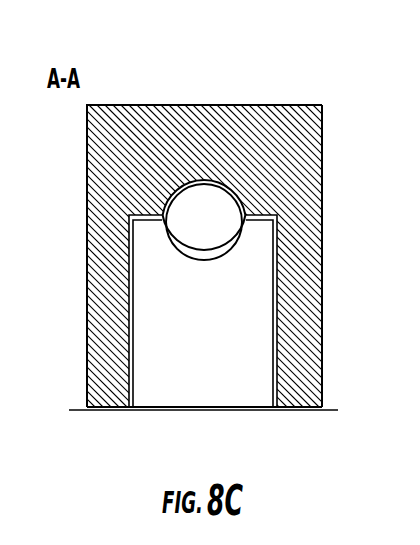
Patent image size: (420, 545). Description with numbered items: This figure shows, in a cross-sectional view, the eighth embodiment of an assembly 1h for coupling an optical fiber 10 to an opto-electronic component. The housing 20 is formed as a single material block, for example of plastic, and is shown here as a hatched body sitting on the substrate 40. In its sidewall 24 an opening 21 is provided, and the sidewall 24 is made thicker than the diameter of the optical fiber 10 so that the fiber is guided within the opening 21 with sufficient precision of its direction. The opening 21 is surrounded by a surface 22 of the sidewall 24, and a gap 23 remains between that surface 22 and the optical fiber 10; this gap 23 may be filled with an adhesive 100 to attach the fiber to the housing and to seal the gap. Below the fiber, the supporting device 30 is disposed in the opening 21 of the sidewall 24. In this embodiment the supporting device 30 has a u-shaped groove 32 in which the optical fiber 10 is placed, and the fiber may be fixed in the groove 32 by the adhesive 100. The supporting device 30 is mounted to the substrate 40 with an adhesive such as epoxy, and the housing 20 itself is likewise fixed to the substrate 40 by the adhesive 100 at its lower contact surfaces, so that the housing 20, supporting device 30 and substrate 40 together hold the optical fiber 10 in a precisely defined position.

The assembly 1h is at (271, 55).
The optical fiber 10 is at (207, 238).
The housing 20 is at (315, 148).
The opening 21 is at (267, 252).
The surface 22 is at (222, 185).
The gap 23 is at (193, 180).
The sidewall 24 is at (308, 292).
The supporting device 30 is at (172, 403).
The u-shaped groove 32 is at (188, 259).
The substrate 40 is at (212, 410).
The adhesive 100 is at (110, 407).